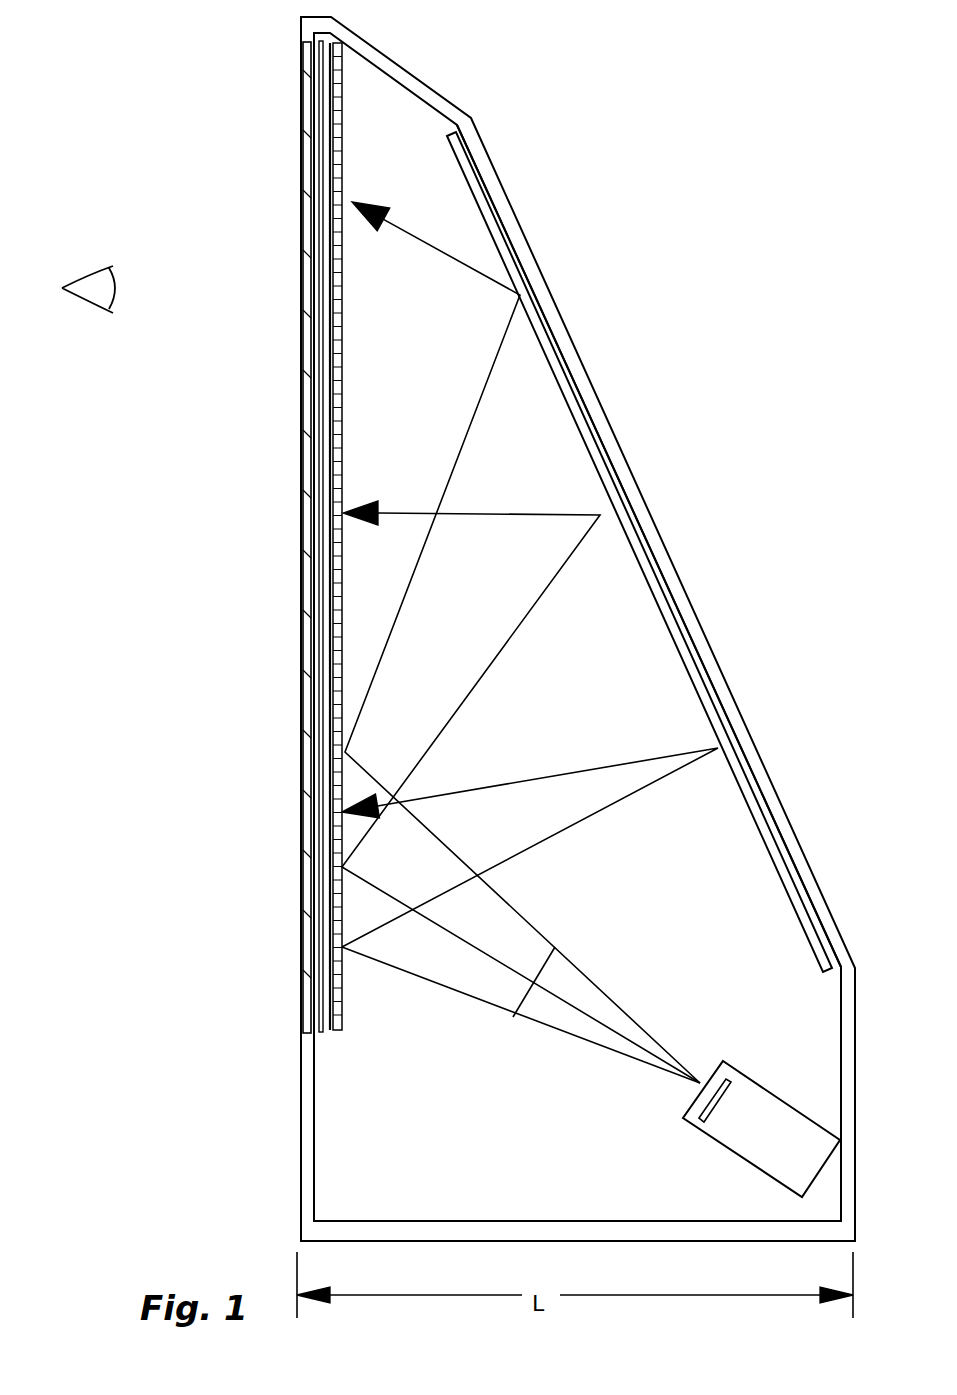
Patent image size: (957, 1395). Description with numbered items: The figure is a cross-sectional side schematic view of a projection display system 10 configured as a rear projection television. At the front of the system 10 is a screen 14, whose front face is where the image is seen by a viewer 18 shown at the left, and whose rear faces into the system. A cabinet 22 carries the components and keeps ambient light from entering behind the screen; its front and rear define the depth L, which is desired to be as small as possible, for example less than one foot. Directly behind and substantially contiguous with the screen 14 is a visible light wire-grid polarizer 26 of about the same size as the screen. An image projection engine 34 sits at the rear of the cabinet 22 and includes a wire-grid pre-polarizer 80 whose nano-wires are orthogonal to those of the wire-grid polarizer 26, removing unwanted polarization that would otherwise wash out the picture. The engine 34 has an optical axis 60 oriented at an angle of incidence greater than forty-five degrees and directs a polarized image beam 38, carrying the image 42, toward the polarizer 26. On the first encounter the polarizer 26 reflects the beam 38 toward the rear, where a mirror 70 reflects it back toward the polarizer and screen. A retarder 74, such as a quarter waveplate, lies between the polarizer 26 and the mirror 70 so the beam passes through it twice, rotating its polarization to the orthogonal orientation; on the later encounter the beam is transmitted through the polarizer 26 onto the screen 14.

The projection display system 10 is at (250, 1097).
The screen 14 is at (302, 97).
The viewer 18 is at (85, 272).
The cabinet 22 is at (396, 60).
The wire-grid polarizer 26 is at (340, 1010).
The image projection engine 34 is at (770, 1183).
The image beam 38 is at (581, 1013).
The image 42 is at (513, 1002).
The optical axis 60 is at (560, 997).
The mirror 70 is at (637, 517).
The retarder 74 is at (670, 638).
The wire-grid pre-polarizer 80 is at (740, 1090).